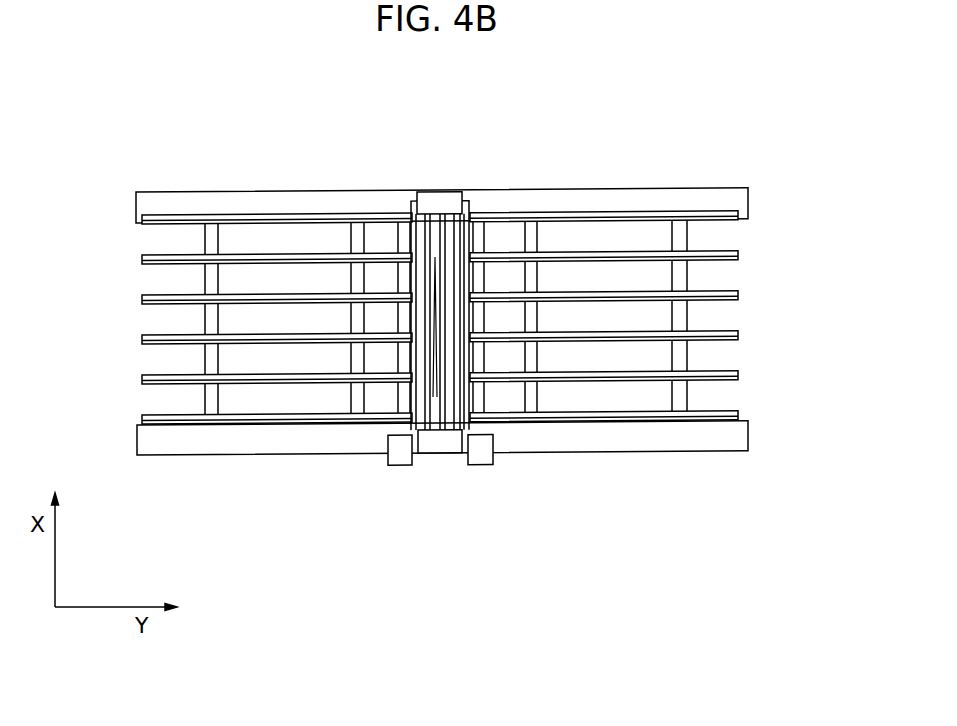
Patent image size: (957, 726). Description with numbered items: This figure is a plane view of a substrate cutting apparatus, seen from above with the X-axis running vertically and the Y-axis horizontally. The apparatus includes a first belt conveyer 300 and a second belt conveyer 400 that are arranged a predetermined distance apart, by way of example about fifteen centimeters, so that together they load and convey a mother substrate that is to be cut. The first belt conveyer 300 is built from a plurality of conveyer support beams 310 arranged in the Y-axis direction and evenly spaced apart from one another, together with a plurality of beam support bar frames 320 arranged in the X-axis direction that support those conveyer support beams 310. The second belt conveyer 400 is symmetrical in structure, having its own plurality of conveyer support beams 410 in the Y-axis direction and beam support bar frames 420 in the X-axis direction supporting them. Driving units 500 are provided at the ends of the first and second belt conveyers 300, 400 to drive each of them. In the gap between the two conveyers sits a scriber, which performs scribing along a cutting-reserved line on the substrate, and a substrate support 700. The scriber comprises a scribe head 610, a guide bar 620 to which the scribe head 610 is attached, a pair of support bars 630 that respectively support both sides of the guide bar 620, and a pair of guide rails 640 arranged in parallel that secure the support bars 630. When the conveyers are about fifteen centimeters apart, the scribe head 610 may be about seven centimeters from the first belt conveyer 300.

The first belt conveyer 300 is at (220, 326).
The conveyer support beams 310 is at (183, 387).
The beam support bar frames 320 is at (213, 238).
The second belt conveyer 400 is at (661, 318).
The conveyer support beams 410 is at (733, 252).
The beam support bar frames 420 is at (535, 238).
The driving units 500 is at (475, 462).
The scribe head 610 is at (417, 238).
The guide bar 620 is at (477, 453).
The support bars 630 is at (437, 197).
The guide rails 640 is at (738, 197).
The substrate support 700 is at (409, 314).